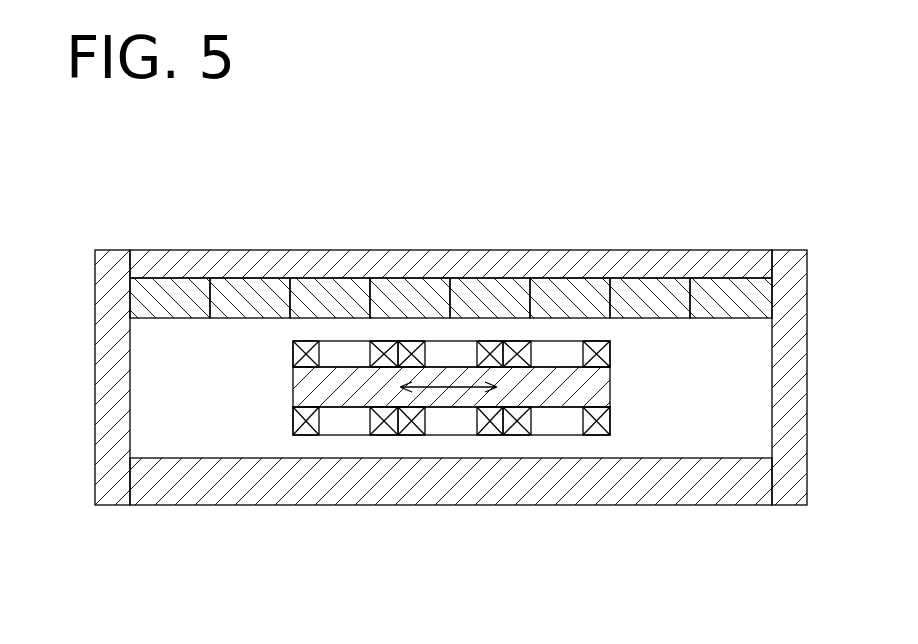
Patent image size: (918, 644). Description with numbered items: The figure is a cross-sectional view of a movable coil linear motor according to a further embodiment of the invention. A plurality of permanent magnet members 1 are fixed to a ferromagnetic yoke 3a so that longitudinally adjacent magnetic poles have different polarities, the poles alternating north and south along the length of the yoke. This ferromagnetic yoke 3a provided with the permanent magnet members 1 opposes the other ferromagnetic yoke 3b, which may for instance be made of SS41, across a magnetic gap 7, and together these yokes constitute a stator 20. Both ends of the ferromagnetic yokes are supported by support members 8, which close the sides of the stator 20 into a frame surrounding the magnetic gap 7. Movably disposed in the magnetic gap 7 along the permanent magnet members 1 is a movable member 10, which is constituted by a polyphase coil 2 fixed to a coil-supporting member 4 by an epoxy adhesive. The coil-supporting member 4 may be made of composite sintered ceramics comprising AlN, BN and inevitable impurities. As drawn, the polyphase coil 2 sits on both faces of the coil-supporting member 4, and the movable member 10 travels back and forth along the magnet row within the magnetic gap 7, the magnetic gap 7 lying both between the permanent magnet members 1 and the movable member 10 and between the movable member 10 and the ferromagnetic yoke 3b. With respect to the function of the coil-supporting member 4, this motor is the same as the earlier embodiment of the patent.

The stator 20 is at (78, 279).
The support member 8 is at (809, 336).
The ferromagnetic yoke 3a is at (632, 257).
The ferromagnetic yoke 3b is at (572, 496).
The permanent magnet member 1 is at (158, 314).
The magnetic gap 7 is at (530, 329).
The movable member 10 is at (441, 382).
The coil-supporting member 4 is at (294, 390).
The polyphase coil 2 is at (611, 349).